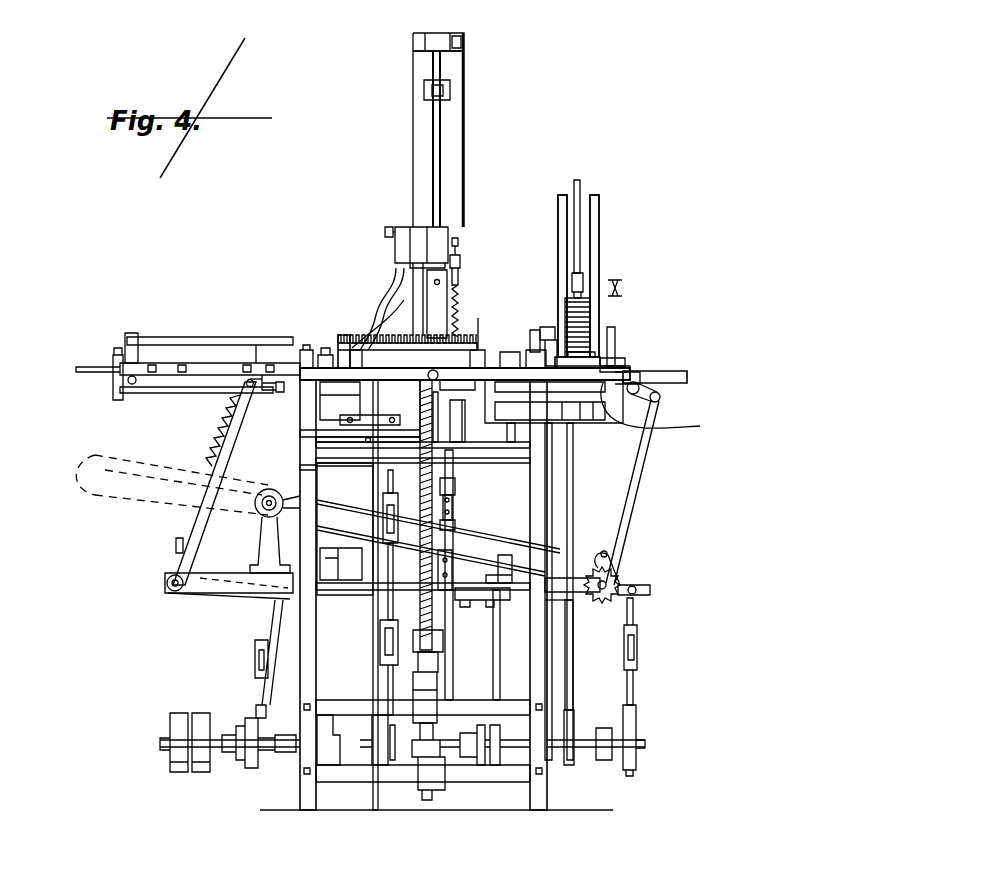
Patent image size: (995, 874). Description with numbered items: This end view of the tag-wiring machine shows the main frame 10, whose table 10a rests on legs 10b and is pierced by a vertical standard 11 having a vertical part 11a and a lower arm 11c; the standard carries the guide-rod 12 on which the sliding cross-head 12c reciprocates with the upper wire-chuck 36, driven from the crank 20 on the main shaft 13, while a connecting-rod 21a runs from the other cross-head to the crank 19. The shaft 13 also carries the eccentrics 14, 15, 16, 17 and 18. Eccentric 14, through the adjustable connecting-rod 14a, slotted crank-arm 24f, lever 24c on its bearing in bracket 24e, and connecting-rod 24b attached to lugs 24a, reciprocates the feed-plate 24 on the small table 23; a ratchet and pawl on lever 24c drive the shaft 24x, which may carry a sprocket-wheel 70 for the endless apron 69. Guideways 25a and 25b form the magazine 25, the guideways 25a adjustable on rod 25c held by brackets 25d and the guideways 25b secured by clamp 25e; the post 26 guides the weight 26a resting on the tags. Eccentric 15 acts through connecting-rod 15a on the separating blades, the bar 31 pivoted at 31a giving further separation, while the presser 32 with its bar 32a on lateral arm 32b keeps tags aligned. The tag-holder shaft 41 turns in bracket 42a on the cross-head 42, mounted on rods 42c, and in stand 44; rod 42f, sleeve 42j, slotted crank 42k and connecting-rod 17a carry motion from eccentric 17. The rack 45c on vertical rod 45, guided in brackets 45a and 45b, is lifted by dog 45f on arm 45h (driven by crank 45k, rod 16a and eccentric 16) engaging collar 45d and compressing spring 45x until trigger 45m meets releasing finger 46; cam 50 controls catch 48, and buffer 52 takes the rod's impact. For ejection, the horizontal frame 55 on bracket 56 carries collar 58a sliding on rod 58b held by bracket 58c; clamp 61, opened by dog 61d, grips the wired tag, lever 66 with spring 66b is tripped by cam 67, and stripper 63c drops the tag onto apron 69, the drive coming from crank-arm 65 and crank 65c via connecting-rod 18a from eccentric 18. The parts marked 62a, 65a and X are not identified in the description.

The main frame 10 is at (535, 480).
The table 10a is at (470, 682).
The legs 10b is at (540, 632).
The vertical standard 11 is at (465, 116).
The vertical part 11a is at (455, 62).
The lower arm 11c is at (456, 42).
The vertical guide-rod 12 is at (437, 148).
The sliding cross-head 12c is at (436, 238).
The main shaft 13 is at (168, 744).
The eccentric 14 is at (630, 776).
The adjustable connecting-rod 14a is at (637, 650).
The eccentric 15 is at (574, 760).
The connecting-rod 15a is at (573, 676).
The eccentric 16 is at (500, 760).
The connecting-rod 16a is at (500, 650).
The eccentric 17 is at (325, 765).
The connecting-rod 17a is at (380, 640).
The eccentric 18 is at (252, 768).
The connecting-rod 18a is at (262, 655).
The crank 19 is at (392, 765).
The crank 20 is at (470, 760).
The connecting-rod 21a is at (388, 590).
The small table 23 is at (620, 366).
The feed-plate 24 is at (687, 377).
The lugs 24a is at (640, 376).
The connecting-rod 24b is at (658, 398).
The lever 24c is at (634, 465).
The bracket 24e is at (598, 556).
The slotted crank-arm 24f is at (645, 585).
The shaft 24x is at (590, 580).
The magazine 25 is at (592, 274).
The guideways 25a is at (611, 352).
The guideways 25b is at (616, 227).
The rod 25c is at (578, 318).
The brackets 25d is at (550, 338).
The clamp 25e is at (618, 360).
The post 26 is at (578, 183).
The weight 26a is at (580, 282).
The bar 31 is at (590, 354).
The pivot 31a is at (666, 410).
The presser 32 is at (510, 352).
The longitudinal bar 32a is at (512, 442).
The lateral arm 32b is at (534, 330).
The upper wire-chuck 36 is at (440, 292).
The shaft 41 is at (400, 350).
The sliding cross-head 42 is at (300, 433).
The bracket 42a is at (370, 415).
The rods 42c is at (340, 466).
The reciprocating rod 42f is at (360, 440).
The sleeve 42j is at (355, 562).
The slotted crank 42k is at (335, 510).
The bracket 44 is at (438, 420).
The vertical rod 45 is at (432, 660).
The bracket 45a is at (452, 500).
The bracket 45b is at (445, 765).
The rack 45c is at (465, 420).
The collar 45d is at (440, 640).
The pivoted dog 45f is at (413, 675).
The arm 45h is at (494, 604).
The crank 45k is at (506, 555).
The trigger 45m is at (452, 565).
The spring 45x is at (450, 530).
The releasing device 46 is at (455, 488).
The catch 48 is at (375, 325).
The cam 50 is at (340, 397).
The spring-buffer 52 is at (440, 785).
The horizontal frame 55 is at (192, 365).
The bracket 56 is at (246, 398).
The collar 58a is at (482, 306).
The rod 58b is at (220, 340).
The bracket 58c is at (131, 333).
The clamp 61 is at (352, 350).
The pivoted dog 61d is at (325, 348).
The hose 62a is at (384, 312).
The stripper 63c is at (286, 400).
The crank-arm 65 is at (200, 517).
The stop 65a is at (176, 545).
The crank 65c is at (245, 593).
The connecting-lever 66 is at (258, 352).
The spring 66b is at (222, 420).
The cam 67 is at (306, 348).
The endless apron 69 is at (272, 490).
The sprocket-wheel 70 is at (612, 572).
The reference mark X is at (615, 288).